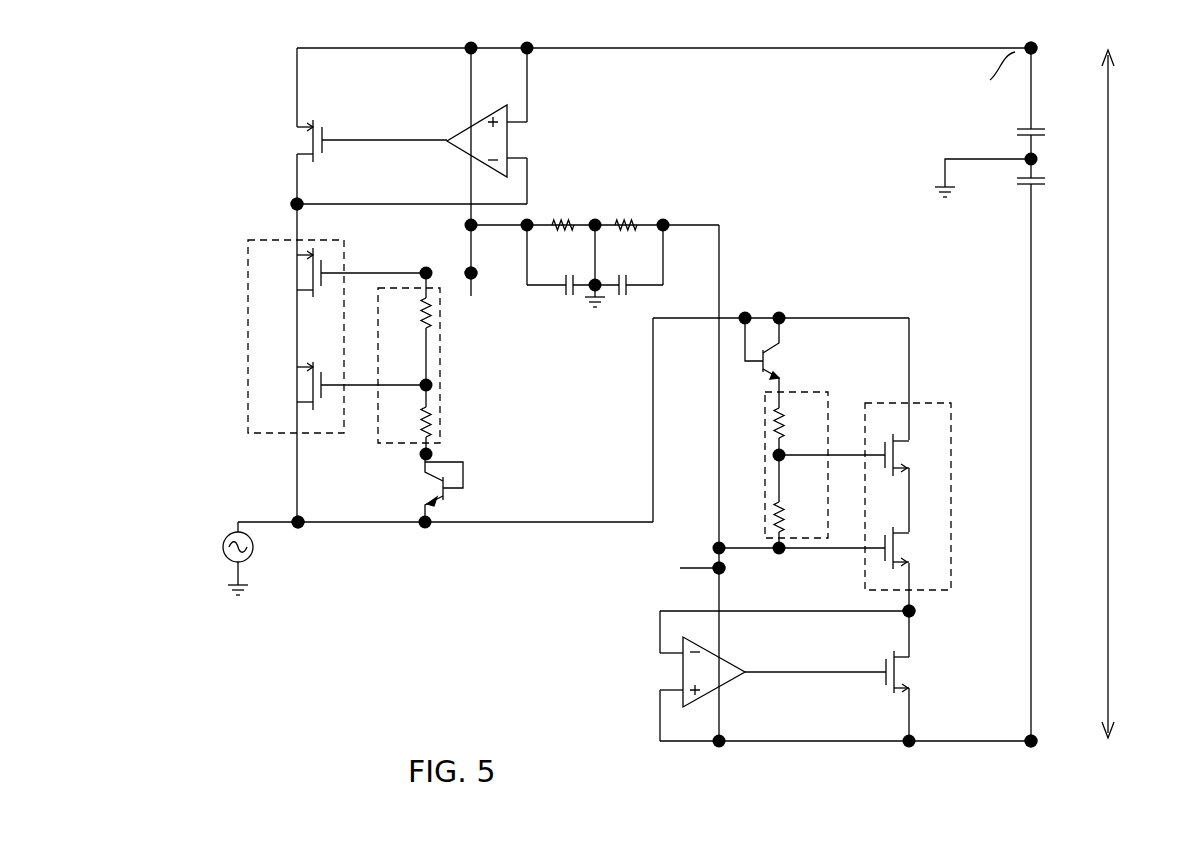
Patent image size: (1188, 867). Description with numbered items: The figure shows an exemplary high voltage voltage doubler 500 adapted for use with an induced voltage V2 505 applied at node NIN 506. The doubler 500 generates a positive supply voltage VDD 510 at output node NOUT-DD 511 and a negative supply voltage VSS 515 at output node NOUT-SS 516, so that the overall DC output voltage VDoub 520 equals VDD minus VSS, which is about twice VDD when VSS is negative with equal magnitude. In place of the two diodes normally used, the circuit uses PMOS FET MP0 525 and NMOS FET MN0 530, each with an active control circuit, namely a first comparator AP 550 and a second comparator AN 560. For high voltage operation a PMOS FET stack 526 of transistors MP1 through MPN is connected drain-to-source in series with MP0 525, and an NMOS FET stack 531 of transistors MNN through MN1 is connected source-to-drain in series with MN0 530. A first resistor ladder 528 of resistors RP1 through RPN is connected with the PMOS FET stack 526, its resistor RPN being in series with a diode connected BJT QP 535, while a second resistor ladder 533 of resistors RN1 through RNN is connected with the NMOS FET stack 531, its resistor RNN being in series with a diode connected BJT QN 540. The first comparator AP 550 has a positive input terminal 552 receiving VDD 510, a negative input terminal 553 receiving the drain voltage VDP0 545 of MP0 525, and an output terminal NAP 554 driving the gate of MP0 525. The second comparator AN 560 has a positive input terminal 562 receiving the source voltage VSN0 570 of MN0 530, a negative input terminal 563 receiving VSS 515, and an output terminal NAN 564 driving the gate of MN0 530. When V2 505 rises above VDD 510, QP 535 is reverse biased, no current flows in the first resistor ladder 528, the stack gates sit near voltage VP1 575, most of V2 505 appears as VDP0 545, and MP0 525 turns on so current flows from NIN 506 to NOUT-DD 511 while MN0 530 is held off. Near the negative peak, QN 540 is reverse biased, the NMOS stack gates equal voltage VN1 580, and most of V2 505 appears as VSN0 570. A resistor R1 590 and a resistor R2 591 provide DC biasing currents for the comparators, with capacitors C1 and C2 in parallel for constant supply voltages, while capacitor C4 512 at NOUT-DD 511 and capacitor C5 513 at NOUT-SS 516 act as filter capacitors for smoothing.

The high voltage voltage doubler 500 is at (293, 715).
The induced voltage V2 505 is at (200, 543).
The node NIN 506 is at (300, 562).
The positive supply voltage VDD 510 is at (1055, 60).
The output node NOUT-DD 511 is at (935, 90).
The capacitor C4 512 is at (975, 130).
The capacitor C5 513 is at (995, 200).
The negative supply voltage VSS 515 is at (1055, 722).
The output node NOUT-SS 516 is at (998, 764).
The overall DC output voltage VDoub 520 is at (1089, 394).
The PMOS FET MP0 525 is at (254, 131).
The PMOS FET stack 526 is at (248, 345).
The first resistor ladder 528 is at (442, 388).
The NMOS FET MN0 530 is at (888, 660).
The NMOS FET stack 531 is at (922, 400).
The second resistor ladder 533 is at (815, 392).
The diode connected BJT QP 535 is at (393, 490).
The diode connected BJT QN 540 is at (805, 352).
The drain voltage VDP0 545 is at (250, 205).
The first comparator AP 550 is at (462, 128).
The positive input terminal 552 is at (489, 112).
The negative input terminal 553 is at (501, 152).
The output terminal NAP 554 is at (415, 123).
The second comparator AN 560 is at (722, 678).
The positive input terminal 562 is at (684, 690).
The negative input terminal 563 is at (684, 653).
The output terminal NAN 564 is at (787, 688).
The source voltage VSN0 570 is at (930, 627).
The voltage VP1 575 is at (476, 330).
The voltage VN1 580 is at (640, 566).
The resistor R1 590 is at (558, 195).
The resistor R2 591 is at (623, 195).